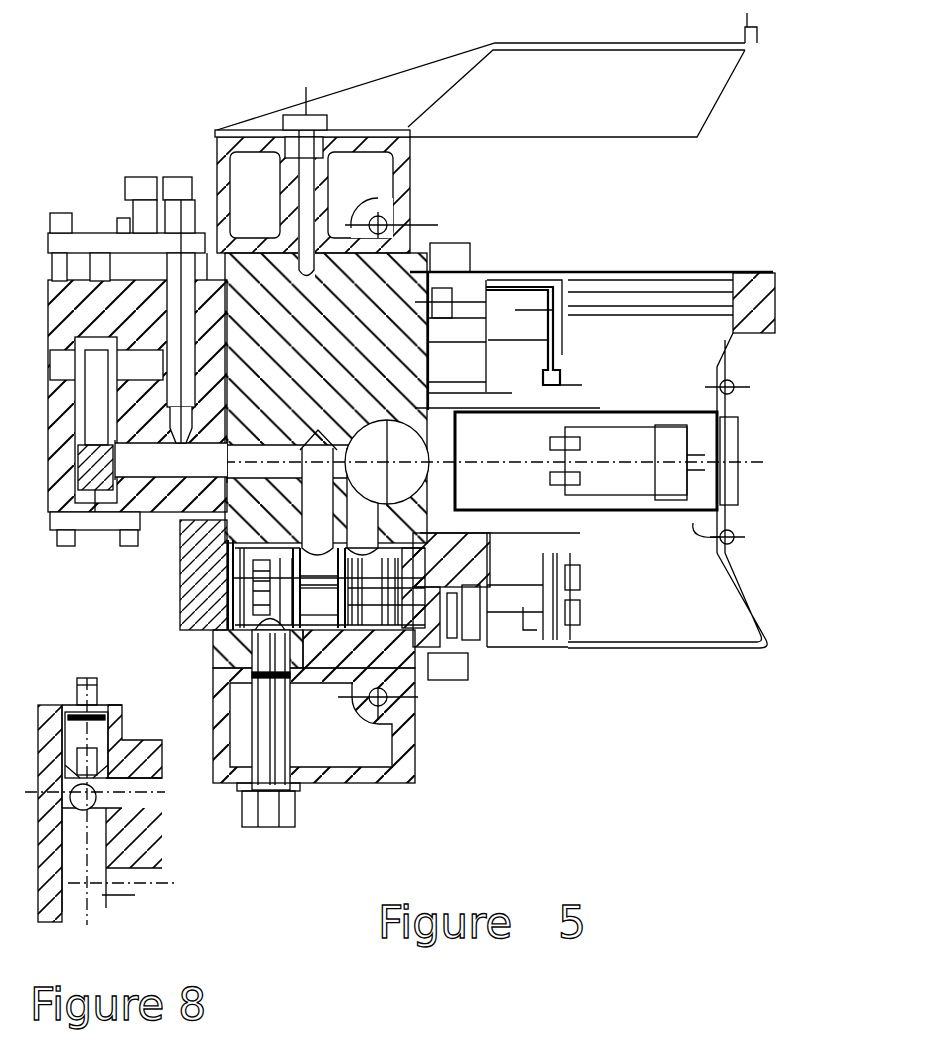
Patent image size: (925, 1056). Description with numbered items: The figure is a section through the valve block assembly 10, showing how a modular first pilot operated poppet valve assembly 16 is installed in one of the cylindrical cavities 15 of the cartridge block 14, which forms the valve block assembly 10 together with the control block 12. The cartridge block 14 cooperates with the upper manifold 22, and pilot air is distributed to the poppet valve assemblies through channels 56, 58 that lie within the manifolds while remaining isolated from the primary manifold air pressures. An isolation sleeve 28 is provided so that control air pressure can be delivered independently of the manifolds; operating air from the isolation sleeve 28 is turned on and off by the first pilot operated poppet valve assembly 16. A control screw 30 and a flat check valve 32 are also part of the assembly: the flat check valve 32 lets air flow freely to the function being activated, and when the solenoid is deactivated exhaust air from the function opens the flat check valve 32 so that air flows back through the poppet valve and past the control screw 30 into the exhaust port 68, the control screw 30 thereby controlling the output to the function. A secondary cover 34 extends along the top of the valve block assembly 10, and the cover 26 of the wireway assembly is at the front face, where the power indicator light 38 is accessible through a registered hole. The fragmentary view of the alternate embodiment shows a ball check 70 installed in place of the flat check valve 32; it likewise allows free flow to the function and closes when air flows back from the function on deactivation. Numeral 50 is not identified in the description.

In FIG. 5, the valve block assembly 10 is at (657, 722).
In FIG. 5, the control block 12 is at (182, 622).
In FIG. 5, the cartridge block 14 is at (180, 527).
In FIG. 5, the cylindrical cavities 15 is at (740, 537).
In FIG. 5, the first pilot operated poppet valve assemblies 16 is at (563, 553).
In FIG. 5, the upper manifold 22 is at (219, 128).
In FIG. 5, the cover 26 is at (690, 271).
In FIG. 5, the isolation sleeve 28 is at (298, 812).
In FIG. 5, the control screw 30 is at (181, 173).
In FIG. 5, the flat check valve 32 is at (72, 252).
In FIG. 5, the secondary cover 34 is at (641, 140).
In FIG. 5, the power indicator light 38 is at (740, 440).
In FIG. 5, the bracket 50 is at (480, 250).
In FIG. 5, the channels 56 is at (393, 702).
In FIG. 5, the channels 58 is at (393, 216).
In FIG. 5, the exhaust port 68 is at (457, 435).
In FIG. 8, the ball check 70 is at (110, 737).